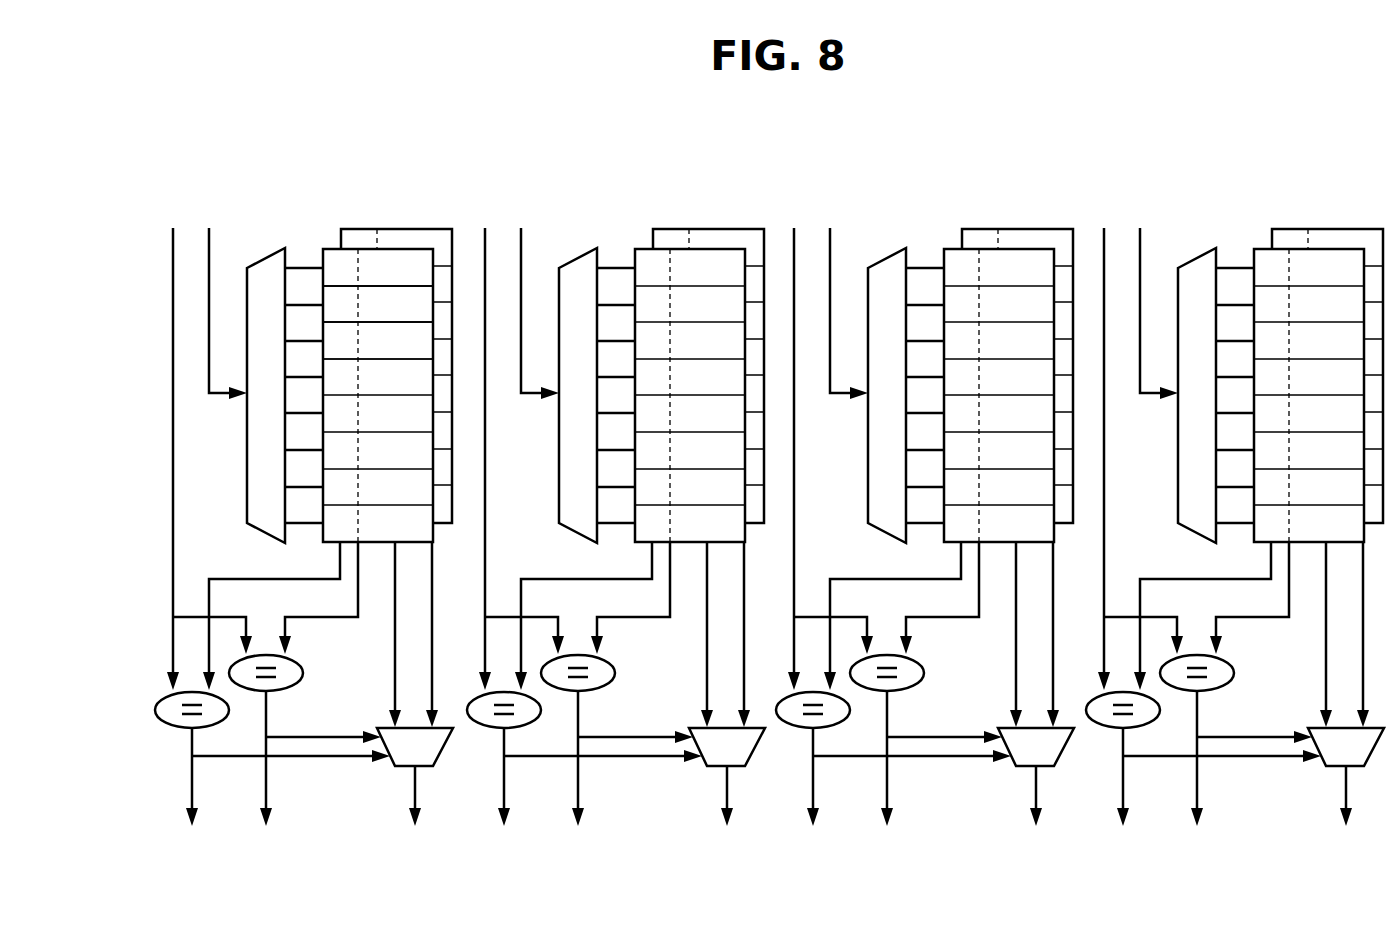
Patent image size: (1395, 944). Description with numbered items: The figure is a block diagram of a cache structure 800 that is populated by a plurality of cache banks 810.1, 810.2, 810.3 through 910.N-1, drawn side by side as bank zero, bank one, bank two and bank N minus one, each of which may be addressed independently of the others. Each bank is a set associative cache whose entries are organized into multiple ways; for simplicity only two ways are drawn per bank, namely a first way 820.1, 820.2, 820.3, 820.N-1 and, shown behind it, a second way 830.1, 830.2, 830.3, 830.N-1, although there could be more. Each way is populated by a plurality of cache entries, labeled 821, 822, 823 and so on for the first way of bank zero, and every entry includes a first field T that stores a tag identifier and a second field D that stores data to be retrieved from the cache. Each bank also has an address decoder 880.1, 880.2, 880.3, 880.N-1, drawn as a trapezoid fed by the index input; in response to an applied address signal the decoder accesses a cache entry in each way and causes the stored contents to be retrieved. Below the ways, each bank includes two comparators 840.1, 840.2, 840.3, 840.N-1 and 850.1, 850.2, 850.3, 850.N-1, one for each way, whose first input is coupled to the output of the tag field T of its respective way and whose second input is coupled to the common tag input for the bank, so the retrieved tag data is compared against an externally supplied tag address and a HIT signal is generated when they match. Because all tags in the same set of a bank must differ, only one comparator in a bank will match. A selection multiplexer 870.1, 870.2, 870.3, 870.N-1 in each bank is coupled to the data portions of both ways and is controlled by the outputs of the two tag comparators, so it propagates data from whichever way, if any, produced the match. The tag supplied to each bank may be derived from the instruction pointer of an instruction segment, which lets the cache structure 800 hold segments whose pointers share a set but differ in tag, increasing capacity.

The cache structure 800 is at (752, 106).
The cache bank 810.1 is at (340, 152).
The cache bank 810.2 is at (595, 465).
The cache bank 810.3 is at (904, 465).
The cache bank 910.N-1 is at (1219, 466).
The first way 820.1 is at (354, 368).
The first way 820.2 is at (666, 368).
The first way 820.3 is at (975, 368).
The first way 820.N-1 is at (1278, 371).
The second way 830.1 is at (435, 229).
The second way 830.2 is at (708, 350).
The second way 830.3 is at (1017, 350).
The second way 830.N-1 is at (1327, 353).
The cache entry 821 is at (413, 278).
The cache entry 822 is at (413, 315).
The cache entry 823 is at (413, 351).
The comparator 840.1 is at (177, 727).
The comparator 840.2 is at (563, 759).
The comparator 840.3 is at (872, 759).
The comparator 840.N-1 is at (1188, 759).
The comparator 850.1 is at (303, 673).
The comparator 850.2 is at (618, 740).
The comparator 850.3 is at (927, 740).
The comparator 850.N-1 is at (1245, 740).
The selection multiplexer 870.1 is at (396, 767).
The selection multiplexer 870.2 is at (703, 777).
The selection multiplexer 870.3 is at (1012, 777).
The selection multiplexer 870.N-1 is at (1316, 777).
The address decoder 880.1 is at (246, 508).
The address decoder 880.2 is at (554, 407).
The address decoder 880.3 is at (863, 407).
The address decoder 880.N-1 is at (1168, 408).